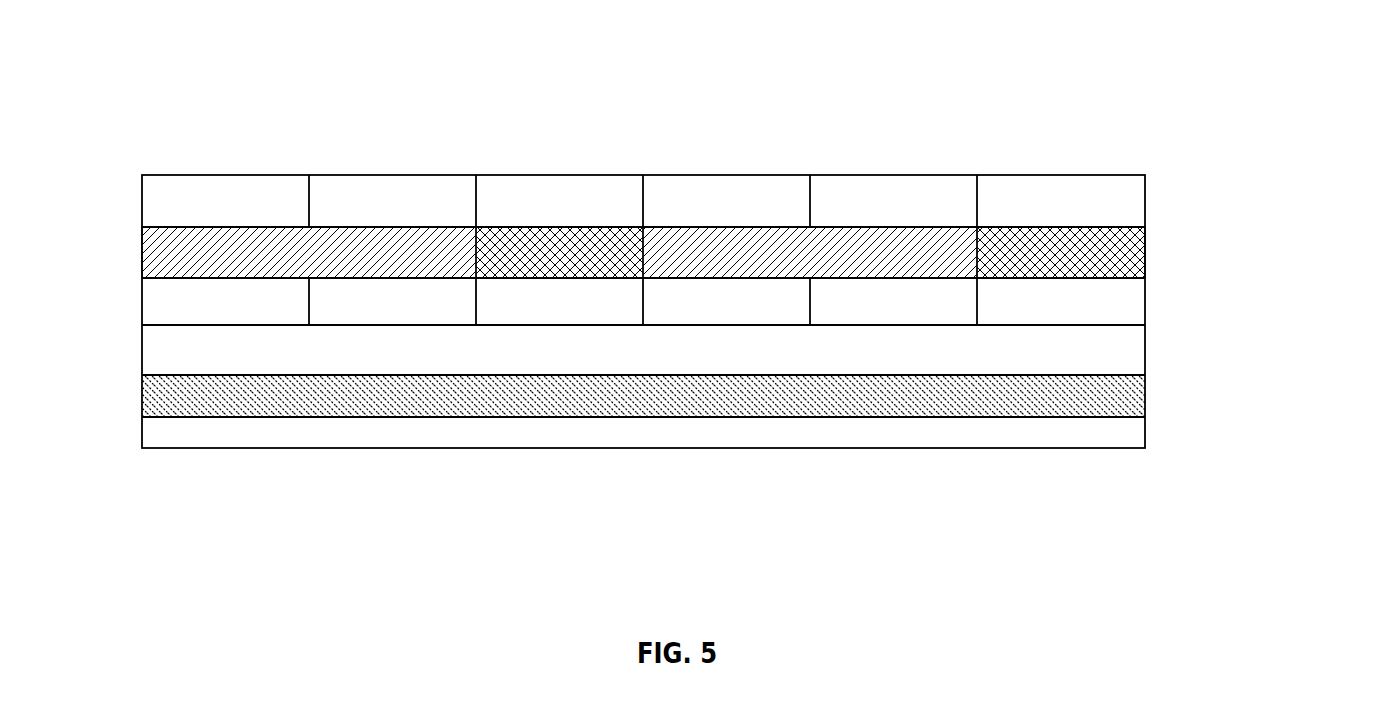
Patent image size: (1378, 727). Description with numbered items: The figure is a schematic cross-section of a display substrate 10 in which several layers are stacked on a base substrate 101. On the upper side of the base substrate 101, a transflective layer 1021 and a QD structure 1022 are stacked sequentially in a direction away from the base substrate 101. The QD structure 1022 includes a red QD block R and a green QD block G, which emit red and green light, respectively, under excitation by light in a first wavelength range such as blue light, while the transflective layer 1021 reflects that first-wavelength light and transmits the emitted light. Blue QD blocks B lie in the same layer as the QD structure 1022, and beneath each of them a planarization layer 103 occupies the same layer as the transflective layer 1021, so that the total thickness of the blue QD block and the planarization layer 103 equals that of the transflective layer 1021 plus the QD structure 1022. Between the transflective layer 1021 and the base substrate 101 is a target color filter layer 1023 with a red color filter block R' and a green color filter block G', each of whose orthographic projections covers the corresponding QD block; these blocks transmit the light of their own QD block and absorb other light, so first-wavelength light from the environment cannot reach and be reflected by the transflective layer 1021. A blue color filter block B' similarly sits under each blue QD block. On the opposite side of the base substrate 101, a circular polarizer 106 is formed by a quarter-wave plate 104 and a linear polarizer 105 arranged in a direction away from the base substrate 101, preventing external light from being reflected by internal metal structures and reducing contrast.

The display substrate 10 is at (171, 67).
The base substrate 101 is at (1170, 354).
The transflective layer 1021 is at (120, 260).
The QD structure 1022 is at (398, 142).
The target color filter layer 1023 is at (383, 358).
The planarization layer 103 is at (1135, 258).
The quarter-wave plate 104 is at (1170, 401).
The linear polarizer 105 is at (1170, 438).
The circular polarizer 106 is at (743, 417).